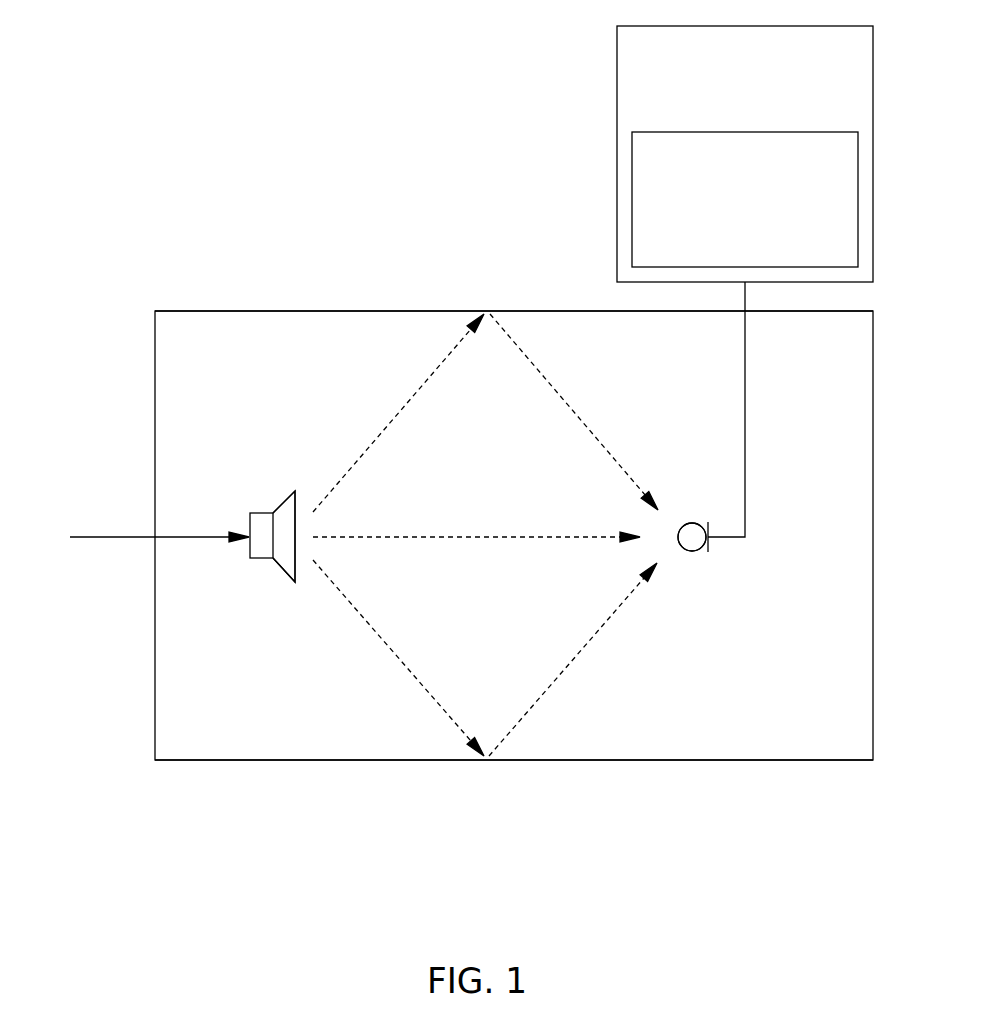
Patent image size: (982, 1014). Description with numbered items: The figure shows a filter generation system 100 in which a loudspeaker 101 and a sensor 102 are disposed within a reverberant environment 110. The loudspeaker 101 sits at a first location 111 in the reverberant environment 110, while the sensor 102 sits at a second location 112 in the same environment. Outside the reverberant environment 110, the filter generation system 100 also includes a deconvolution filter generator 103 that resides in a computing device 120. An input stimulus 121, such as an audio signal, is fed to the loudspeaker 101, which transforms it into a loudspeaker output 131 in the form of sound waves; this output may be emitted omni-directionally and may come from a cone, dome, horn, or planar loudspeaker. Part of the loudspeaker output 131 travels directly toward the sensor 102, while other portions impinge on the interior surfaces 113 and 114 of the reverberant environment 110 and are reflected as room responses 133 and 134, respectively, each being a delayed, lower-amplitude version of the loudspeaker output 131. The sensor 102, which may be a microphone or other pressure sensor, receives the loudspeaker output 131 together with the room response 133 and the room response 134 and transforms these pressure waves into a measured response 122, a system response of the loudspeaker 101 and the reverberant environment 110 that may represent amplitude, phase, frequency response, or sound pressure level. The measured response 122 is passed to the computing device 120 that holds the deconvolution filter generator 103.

The filter generation system 100 is at (208, 58).
The loudspeaker 101 is at (263, 512).
The sensor 102 is at (692, 522).
The deconvolution filter generator 103 is at (745, 199).
The reverberant environment 110 is at (617, 760).
The first location 111 is at (268, 592).
The second location 112 is at (709, 578).
The interior surface 113 is at (260, 311).
The interior surface 114 is at (260, 760).
The computing device 120 is at (745, 154).
The input stimulus 121 is at (140, 537).
The measured response 122 is at (745, 357).
The loudspeaker output 131 is at (400, 408).
The room response 133 is at (537, 368).
The room response 134 is at (573, 663).